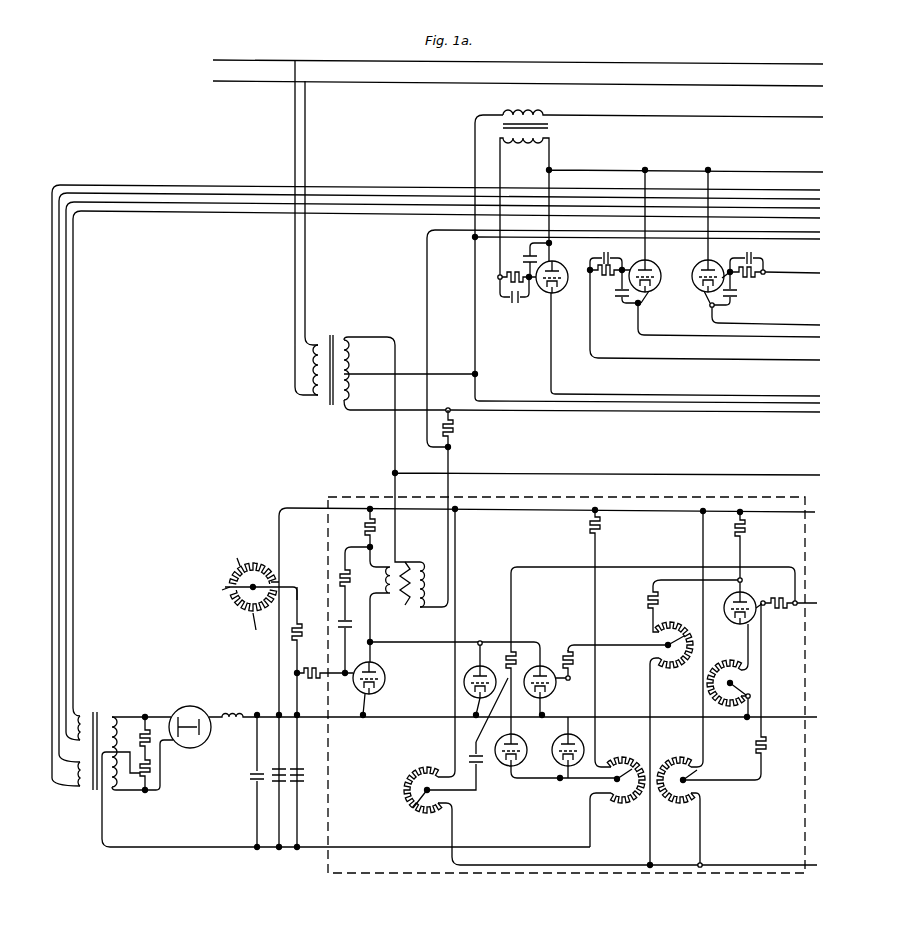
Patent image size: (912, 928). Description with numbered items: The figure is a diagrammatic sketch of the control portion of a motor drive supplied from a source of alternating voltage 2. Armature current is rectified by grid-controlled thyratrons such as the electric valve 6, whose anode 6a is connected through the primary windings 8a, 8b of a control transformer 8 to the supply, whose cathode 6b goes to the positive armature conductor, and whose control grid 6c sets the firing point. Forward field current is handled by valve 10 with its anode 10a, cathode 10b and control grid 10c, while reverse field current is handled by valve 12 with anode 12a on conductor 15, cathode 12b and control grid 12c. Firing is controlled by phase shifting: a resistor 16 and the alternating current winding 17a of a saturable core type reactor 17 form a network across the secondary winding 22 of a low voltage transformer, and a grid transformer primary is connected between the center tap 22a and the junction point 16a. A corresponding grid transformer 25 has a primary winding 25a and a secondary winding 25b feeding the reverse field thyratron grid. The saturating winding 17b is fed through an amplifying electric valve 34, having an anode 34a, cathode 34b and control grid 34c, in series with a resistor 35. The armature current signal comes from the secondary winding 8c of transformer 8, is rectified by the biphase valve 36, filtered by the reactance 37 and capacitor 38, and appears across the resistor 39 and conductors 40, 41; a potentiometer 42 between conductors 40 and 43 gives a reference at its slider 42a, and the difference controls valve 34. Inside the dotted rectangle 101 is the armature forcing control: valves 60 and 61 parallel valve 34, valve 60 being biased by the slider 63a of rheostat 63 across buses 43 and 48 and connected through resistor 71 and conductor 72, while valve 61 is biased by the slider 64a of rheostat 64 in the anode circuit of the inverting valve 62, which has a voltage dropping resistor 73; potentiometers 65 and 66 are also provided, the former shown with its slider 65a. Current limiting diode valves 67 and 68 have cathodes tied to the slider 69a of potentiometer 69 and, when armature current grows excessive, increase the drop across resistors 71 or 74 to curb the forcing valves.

The source of alternating voltage 2 is at (675, 86).
The electric valve 6 is at (713, 263).
The anode 6a is at (706, 261).
The cathode 6b is at (707, 293).
The control grid 6c is at (702, 280).
The control transformer 8 is at (98, 716).
The primary winding 8a is at (84, 712).
The primary winding 8b is at (80, 790).
The secondary winding 8c is at (118, 790).
The electric valve 10 is at (649, 261).
The anode 10a is at (641, 261).
The cathode 10b is at (651, 293).
The control grid 10c is at (660, 275).
The electric valve 12 is at (556, 294).
The anode 12a is at (546, 293).
The cathode 12b is at (556, 262).
The control grid 12c is at (560, 286).
The conductor 15 is at (722, 394).
The resistor 16 is at (455, 424).
The junction point 16a is at (452, 449).
The saturable core type reactor 17 is at (412, 550).
The alternating current winding 17a is at (424, 562).
The saturating winding 17b is at (389, 580).
The secondary winding 22 is at (318, 343).
The center tap 22a is at (348, 372).
The grid transformer 25 is at (550, 127).
The primary winding 25a is at (540, 112).
The secondary winding 25b is at (526, 145).
The amplifying electric valve 34 is at (382, 685).
The anode 34a is at (375, 668).
The cathode 34b is at (372, 692).
The control grid 34c is at (384, 676).
The resistor 35 is at (365, 524).
The biphase rectifying electric valve 36 is at (195, 748).
The reactance 37 is at (240, 712).
The capacitor 38 is at (250, 777).
The resistor 39 is at (276, 768).
The conductor 40 is at (310, 717).
The conductor 41 is at (308, 845).
The potentiometer 42 is at (236, 605).
The slider 42a is at (253, 563).
The conductor 43 is at (290, 507).
The constant potential bus 48 is at (676, 864).
The electric valve 60 is at (474, 670).
The electric valve 61 is at (535, 668).
The electric valve 62 is at (733, 603).
The rheostat 63 is at (428, 768).
The slider 63a is at (418, 810).
The rheostat 64 is at (670, 622).
The slider 64a is at (662, 641).
The potentiometer 65 is at (683, 762).
The switch contact arm 65a is at (696, 776).
The potentiometer 66 is at (730, 663).
The electric valve 67 is at (527, 738).
The electric valve 68 is at (561, 741).
The potentiometer 69 is at (624, 802).
The slider 69a is at (625, 760).
The resistor 71 is at (506, 660).
The conductor 72 is at (575, 567).
The voltage dropping resistor 73 is at (750, 528).
The resistor 74 is at (562, 660).
The dotted rectangle 101 is at (608, 497).